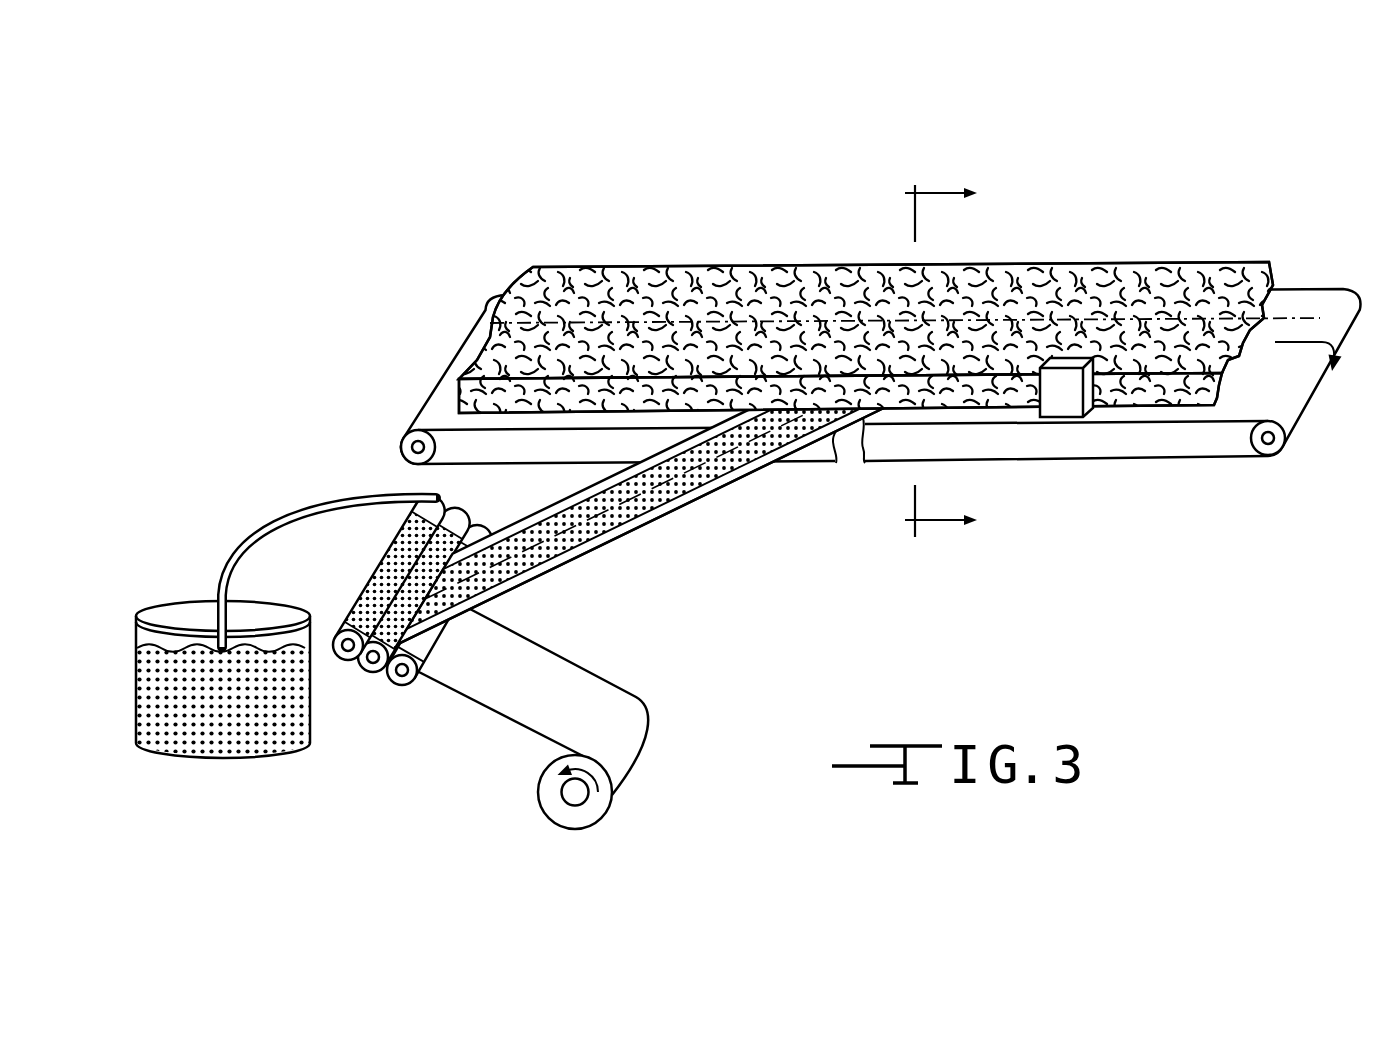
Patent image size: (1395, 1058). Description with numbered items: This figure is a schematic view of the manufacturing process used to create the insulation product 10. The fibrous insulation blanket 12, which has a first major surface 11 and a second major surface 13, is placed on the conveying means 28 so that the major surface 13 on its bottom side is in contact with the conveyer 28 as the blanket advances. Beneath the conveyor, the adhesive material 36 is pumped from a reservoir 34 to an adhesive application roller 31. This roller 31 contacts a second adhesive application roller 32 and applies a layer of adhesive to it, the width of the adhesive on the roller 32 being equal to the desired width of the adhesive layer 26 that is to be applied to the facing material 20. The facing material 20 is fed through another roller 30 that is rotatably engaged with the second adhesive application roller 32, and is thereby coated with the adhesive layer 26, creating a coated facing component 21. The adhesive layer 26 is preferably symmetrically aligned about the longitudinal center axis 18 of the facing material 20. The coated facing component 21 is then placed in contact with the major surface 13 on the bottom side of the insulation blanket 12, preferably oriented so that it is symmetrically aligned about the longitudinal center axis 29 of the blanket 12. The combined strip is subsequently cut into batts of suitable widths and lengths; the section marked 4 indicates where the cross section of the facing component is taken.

The insulation product 10 is at (788, 238).
The first major surface 11 is at (1275, 294).
The fibrous insulation blanket 12 is at (455, 398).
The second major surface 13 is at (1186, 406).
The longitudinal center axis of the facing material 18 is at (740, 457).
The facing material 20 is at (582, 700).
The coated facing component 21 is at (613, 543).
The adhesive layer 26 is at (683, 490).
The conveying means 28 is at (403, 423).
The longitudinal center axis 29 is at (1208, 320).
The roller 30 is at (403, 684).
The adhesive application roller 31 is at (346, 662).
The second adhesive application roller 32 is at (368, 673).
The reservoir 34 is at (188, 603).
The adhesive material 36 is at (190, 723).
The section line 4- 4 is at (953, 353).